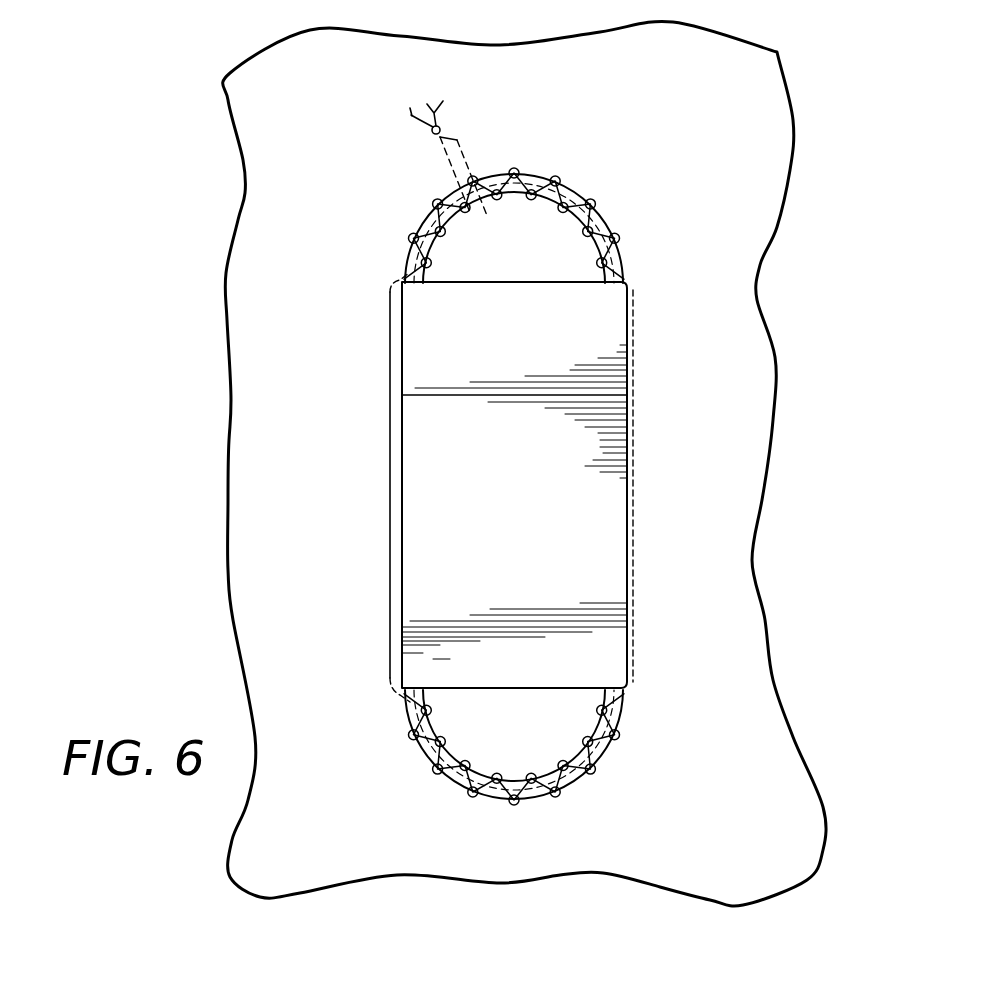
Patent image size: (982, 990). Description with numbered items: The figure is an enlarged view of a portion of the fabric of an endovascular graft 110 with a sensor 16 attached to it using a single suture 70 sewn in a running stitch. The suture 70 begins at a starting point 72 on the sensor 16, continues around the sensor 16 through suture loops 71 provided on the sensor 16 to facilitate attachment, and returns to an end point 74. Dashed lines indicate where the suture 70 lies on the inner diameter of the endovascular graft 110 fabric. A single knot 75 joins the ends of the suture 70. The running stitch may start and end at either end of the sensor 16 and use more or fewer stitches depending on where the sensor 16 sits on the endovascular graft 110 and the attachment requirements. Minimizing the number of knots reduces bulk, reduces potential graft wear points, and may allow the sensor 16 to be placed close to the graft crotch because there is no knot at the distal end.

The sensor 16 is at (595, 505).
The suture 70 is at (628, 250).
The suture loops 71 is at (593, 202).
The starting point 72 is at (441, 157).
The end point 74 is at (450, 141).
The knot 75 is at (440, 130).
The endovascular graft 110 is at (760, 165).